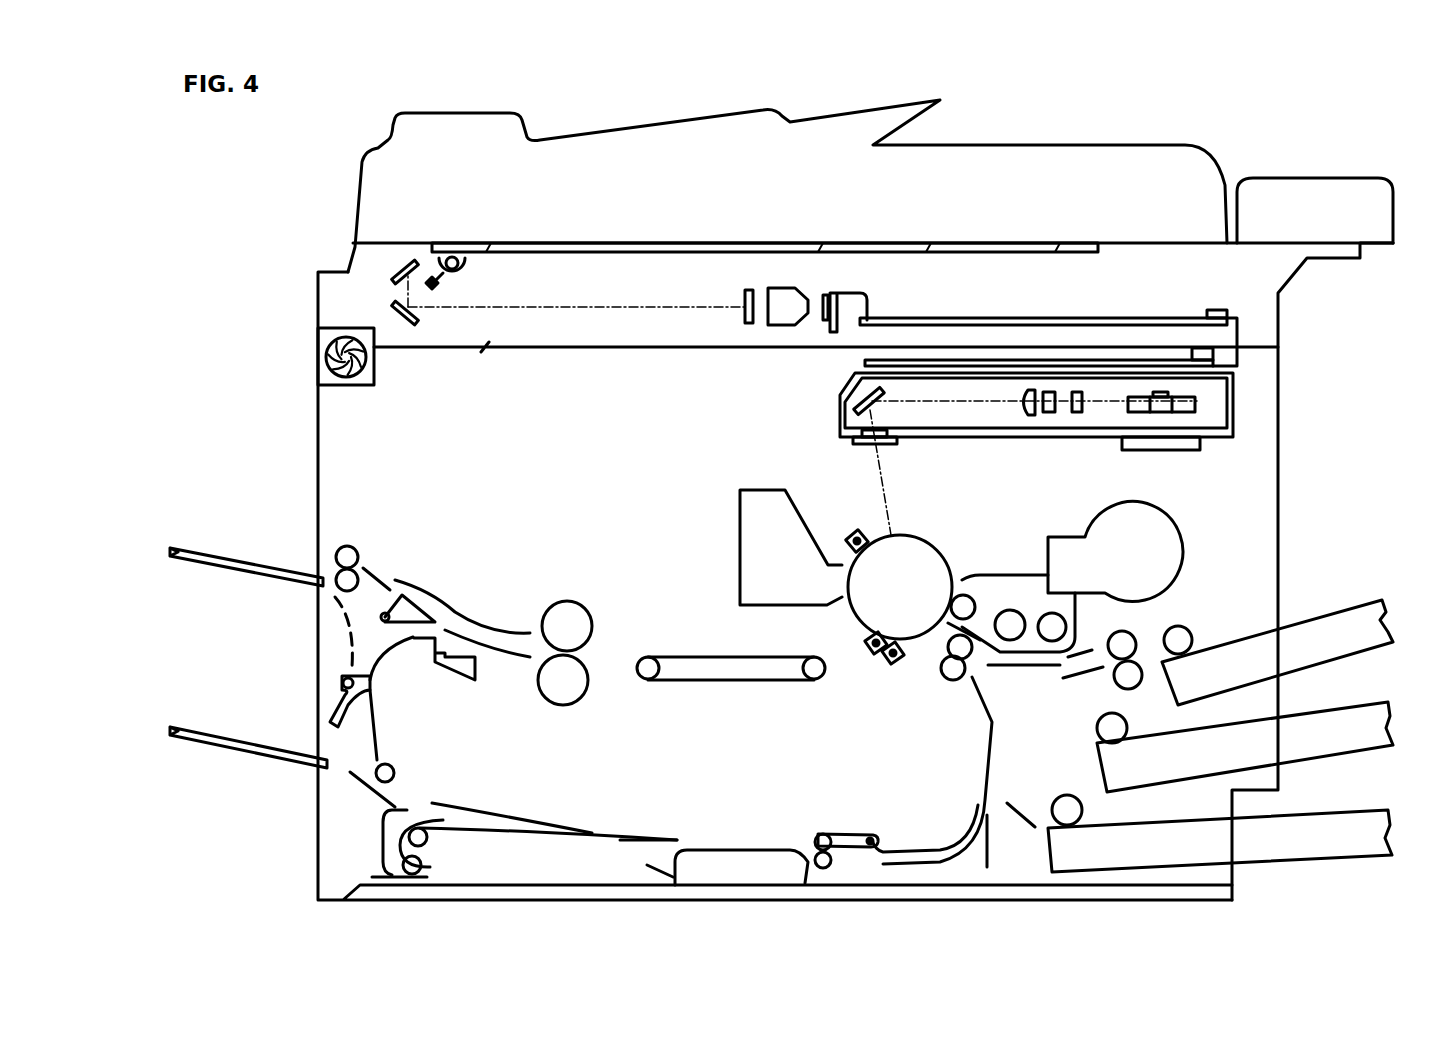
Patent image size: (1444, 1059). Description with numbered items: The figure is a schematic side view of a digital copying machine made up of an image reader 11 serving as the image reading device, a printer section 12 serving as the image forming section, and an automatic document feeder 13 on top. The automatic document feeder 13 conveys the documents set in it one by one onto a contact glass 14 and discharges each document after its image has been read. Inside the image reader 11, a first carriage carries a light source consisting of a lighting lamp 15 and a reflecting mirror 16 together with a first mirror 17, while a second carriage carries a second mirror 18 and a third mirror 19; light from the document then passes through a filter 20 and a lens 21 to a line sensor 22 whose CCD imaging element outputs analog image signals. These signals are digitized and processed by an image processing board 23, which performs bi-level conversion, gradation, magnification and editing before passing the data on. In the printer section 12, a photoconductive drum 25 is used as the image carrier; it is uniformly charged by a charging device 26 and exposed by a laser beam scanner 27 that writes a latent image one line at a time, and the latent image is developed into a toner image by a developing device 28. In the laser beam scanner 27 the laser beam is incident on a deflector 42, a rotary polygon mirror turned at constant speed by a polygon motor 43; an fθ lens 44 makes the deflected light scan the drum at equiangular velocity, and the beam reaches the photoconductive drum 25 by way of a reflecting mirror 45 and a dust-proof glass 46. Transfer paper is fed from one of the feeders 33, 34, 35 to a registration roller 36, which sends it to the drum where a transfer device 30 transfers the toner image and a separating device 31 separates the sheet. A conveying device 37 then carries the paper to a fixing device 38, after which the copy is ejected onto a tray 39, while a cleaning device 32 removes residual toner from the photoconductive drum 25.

The image reader 11 is at (318, 302).
The printer section 12 is at (1278, 494).
The automatic document feeder 13 is at (1103, 147).
The contact glass 14 is at (920, 253).
The lighting lamp 15 is at (452, 257).
The reflecting mirror 16 is at (466, 268).
The first mirror 17 is at (441, 287).
The second mirror 18 is at (394, 276).
The third mirror 19 is at (416, 322).
The filter 20 is at (743, 302).
The lens 21 is at (800, 290).
The line sensor 22 is at (830, 298).
The image processing board 23 is at (1035, 320).
The photoconductive drum 25 is at (942, 550).
The charging device 26 is at (853, 531).
The laser beam scanner 27 is at (948, 438).
The developing device 28 is at (1080, 597).
The transfer device 30 is at (893, 663).
The separating device 31 is at (866, 654).
The cleaning device 32 is at (740, 545).
The feeder 33 is at (1322, 617).
The feeder 34 is at (1341, 708).
The feeder 35 is at (1341, 812).
The registration roller 36 is at (953, 682).
The conveying device 37 is at (731, 682).
The fixing device 38 is at (560, 706).
The tray 39 is at (250, 580).
The deflector 42 is at (1200, 403).
The polygon motor 43 is at (1170, 450).
The fθ lens 44 is at (1022, 415).
The reflecting mirror 45 is at (852, 395).
The dust-proof glass 46 is at (860, 445).